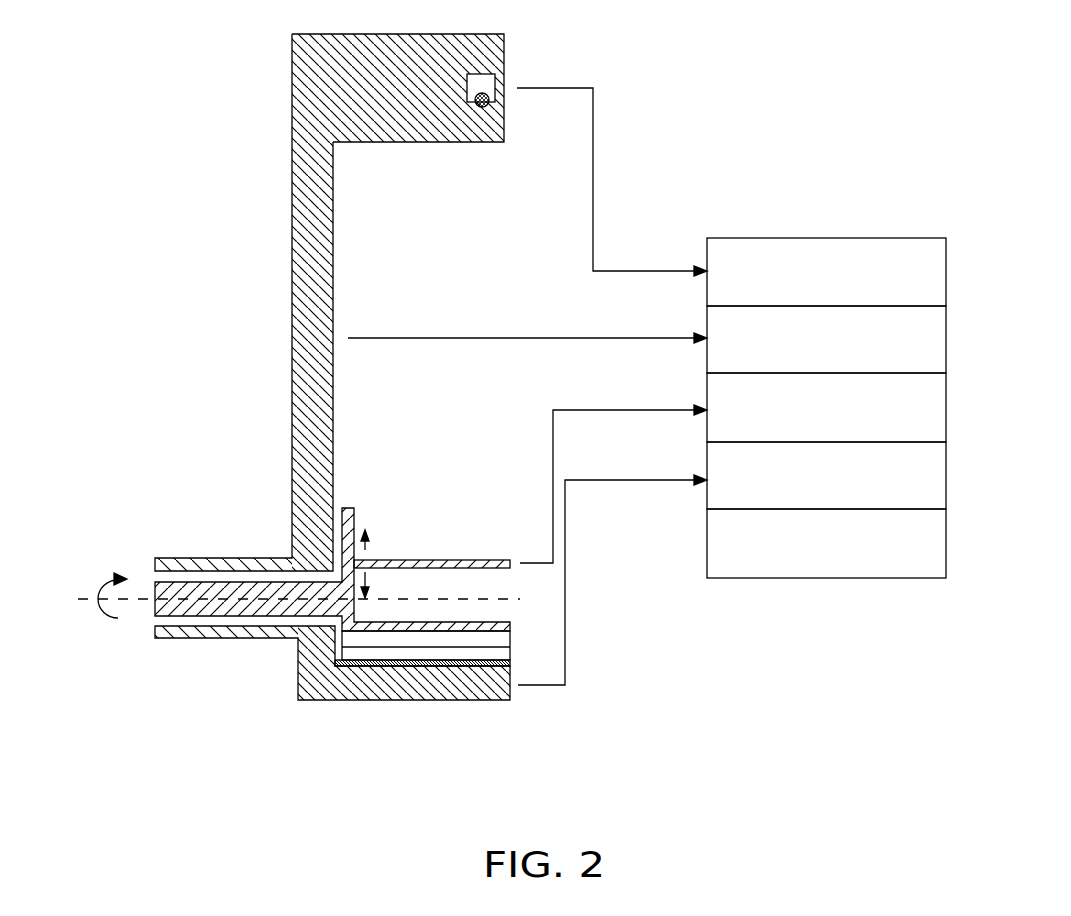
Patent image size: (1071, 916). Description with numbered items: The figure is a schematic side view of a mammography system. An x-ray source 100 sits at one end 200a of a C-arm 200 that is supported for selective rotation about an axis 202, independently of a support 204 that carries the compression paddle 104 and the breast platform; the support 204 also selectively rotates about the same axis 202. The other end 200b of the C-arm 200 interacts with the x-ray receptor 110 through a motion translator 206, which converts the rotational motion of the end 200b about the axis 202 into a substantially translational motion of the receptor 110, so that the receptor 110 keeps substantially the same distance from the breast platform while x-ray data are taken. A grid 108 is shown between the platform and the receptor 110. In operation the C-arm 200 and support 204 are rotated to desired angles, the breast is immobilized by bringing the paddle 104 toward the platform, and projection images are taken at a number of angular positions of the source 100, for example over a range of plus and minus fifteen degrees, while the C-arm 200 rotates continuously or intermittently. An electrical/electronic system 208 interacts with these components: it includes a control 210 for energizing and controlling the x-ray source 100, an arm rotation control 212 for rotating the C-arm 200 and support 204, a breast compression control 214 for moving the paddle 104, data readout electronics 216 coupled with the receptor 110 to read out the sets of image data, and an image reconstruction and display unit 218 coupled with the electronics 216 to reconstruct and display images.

The x-ray source 100 is at (487, 95).
The compression paddle 104 is at (423, 560).
The grid 108 is at (510, 647).
The x-ray receptor 110 is at (510, 654).
The C-arm 200 is at (354, 388).
The one end of C-arm 200a is at (505, 47).
The other end of C-arm 200b is at (392, 701).
The axis 202 is at (73, 598).
The support 204 is at (153, 590).
The motion translator 206 is at (510, 663).
The electrical/electronic system 208 is at (826, 371).
The control 210 is at (940, 268).
The arm rotation control 212 is at (940, 342).
The breast compression control 214 is at (940, 410).
The data readout electronics 216 is at (940, 475).
The image reconstruction and display unit 218 is at (940, 542).